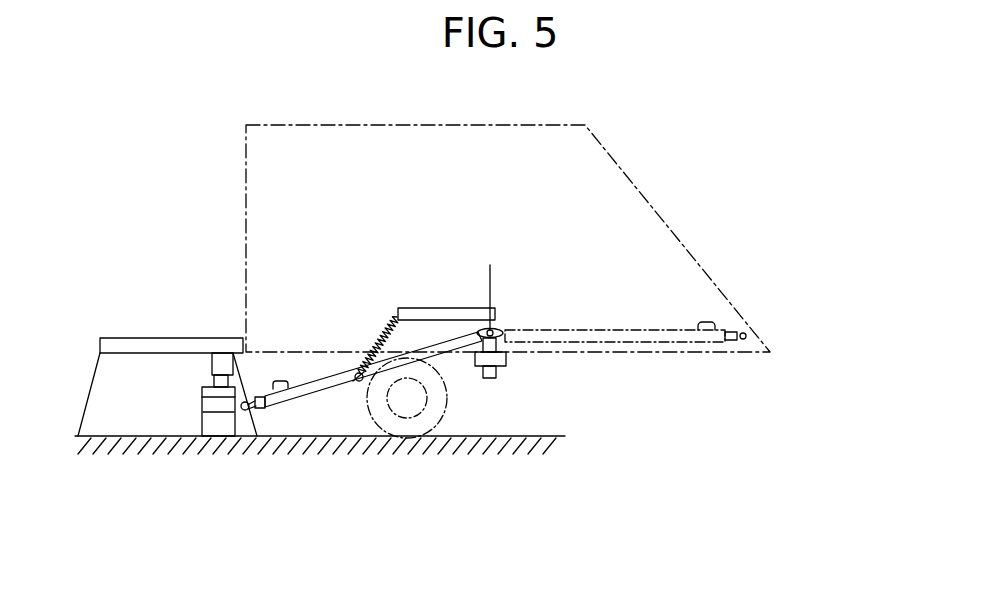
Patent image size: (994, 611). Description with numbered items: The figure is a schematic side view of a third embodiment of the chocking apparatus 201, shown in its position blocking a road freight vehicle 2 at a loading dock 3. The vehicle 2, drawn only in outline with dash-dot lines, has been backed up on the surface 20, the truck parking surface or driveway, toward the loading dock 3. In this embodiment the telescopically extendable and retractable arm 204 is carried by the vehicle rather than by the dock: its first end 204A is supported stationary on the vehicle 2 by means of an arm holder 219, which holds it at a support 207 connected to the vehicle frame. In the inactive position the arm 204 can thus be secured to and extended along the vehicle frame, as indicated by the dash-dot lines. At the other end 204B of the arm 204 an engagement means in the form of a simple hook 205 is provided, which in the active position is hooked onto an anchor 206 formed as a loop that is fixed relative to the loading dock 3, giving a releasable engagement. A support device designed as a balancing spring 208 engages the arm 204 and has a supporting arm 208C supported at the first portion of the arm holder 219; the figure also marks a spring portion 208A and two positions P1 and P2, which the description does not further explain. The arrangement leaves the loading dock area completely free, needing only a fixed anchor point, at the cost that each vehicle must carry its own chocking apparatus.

The road freight vehicle 2 is at (612, 148).
The loading dock 3 is at (113, 335).
The surface 20 is at (112, 436).
The chocking apparatus 201 is at (304, 364).
The arm 204 is at (331, 422).
The first end of the arm 204A is at (484, 346).
The other end of the arm 204B is at (256, 398).
The hook 205 is at (246, 410).
The anchor 206 is at (240, 410).
The support 207 is at (520, 351).
The balancing spring 208 is at (396, 312).
The spring first end 208A is at (361, 383).
The supporting arm 208C is at (491, 288).
The arm holder 219 is at (515, 319).
The pivot point P1 is at (453, 313).
The pivot point P2 is at (493, 353).